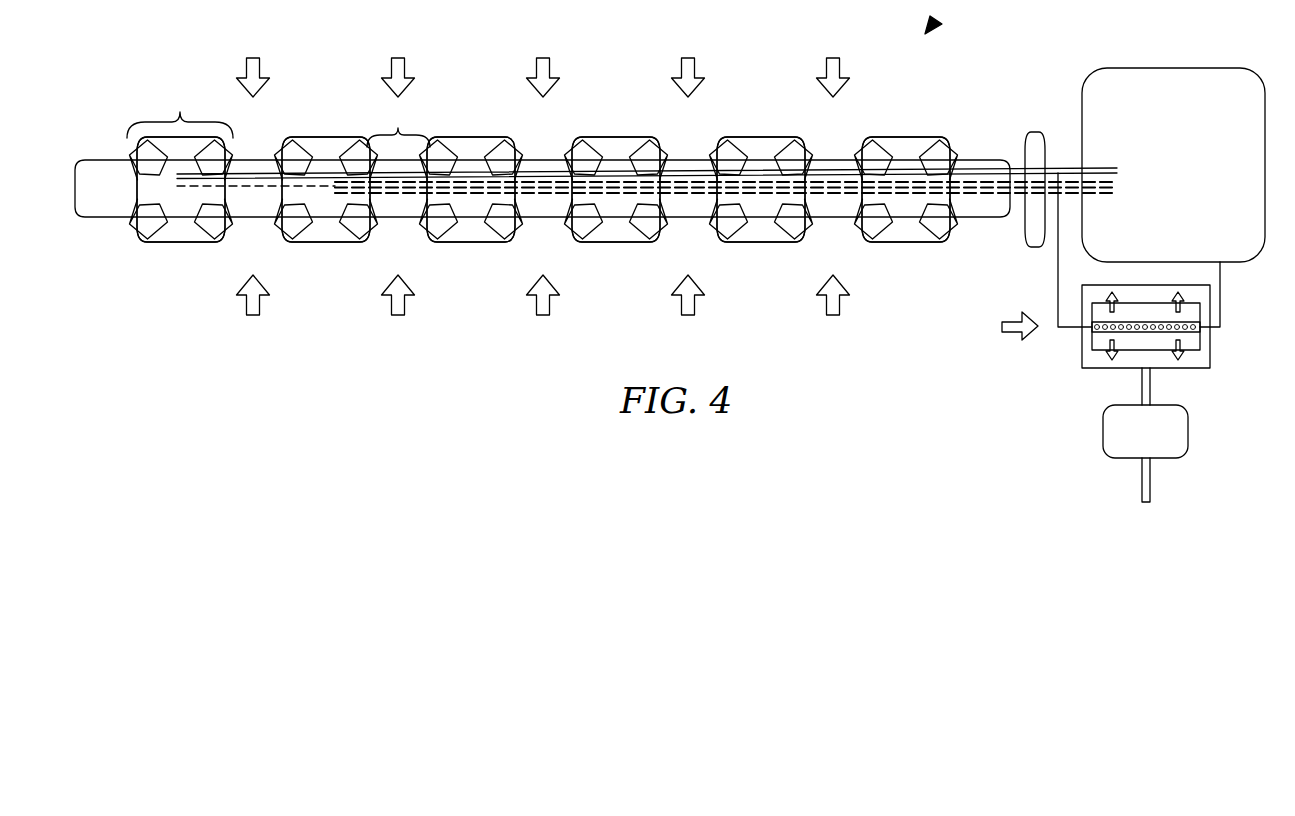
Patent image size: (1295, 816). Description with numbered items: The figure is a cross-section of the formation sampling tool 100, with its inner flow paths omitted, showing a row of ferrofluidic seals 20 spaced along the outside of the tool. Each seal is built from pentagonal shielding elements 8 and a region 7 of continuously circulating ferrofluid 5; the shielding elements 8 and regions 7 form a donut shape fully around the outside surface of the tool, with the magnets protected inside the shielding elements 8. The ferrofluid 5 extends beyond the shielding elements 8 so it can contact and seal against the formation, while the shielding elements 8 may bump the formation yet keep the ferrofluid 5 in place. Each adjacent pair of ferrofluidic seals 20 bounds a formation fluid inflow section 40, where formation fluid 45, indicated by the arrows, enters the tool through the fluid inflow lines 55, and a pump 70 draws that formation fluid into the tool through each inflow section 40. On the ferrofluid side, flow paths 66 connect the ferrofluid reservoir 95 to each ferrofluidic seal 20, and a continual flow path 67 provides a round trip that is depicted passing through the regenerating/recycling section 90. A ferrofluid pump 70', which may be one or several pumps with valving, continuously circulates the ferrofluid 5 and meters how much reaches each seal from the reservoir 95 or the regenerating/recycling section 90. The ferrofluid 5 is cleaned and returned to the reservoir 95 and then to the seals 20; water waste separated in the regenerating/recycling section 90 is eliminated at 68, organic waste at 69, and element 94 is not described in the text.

The formation sampling tool 100 is at (938, 18).
The ferrofluid 5 is at (175, 158).
The region of continuously circulating ferrofluid 7 is at (178, 236).
The pentagonal shielding element 8 is at (133, 231).
The ferrofluidic seal 20 is at (180, 112).
The formation fluid inflow section 40 is at (398, 124).
The formation fluid 45 is at (260, 63).
The flow path 66 is at (997, 202).
The continual flow path 67 is at (987, 167).
The ferrofluid pump 70' is at (1010, 168).
The ferrofluid reservoir 95 is at (1182, 158).
The water waste elimination 68 is at (1108, 355).
The organic waste elimination 69 is at (1185, 352).
The membrane 94 is at (1182, 326).
The regenerating/recycling section 90 is at (1148, 340).
The pump 70 is at (1145, 413).
The fluid inflow line 55 is at (1142, 478).